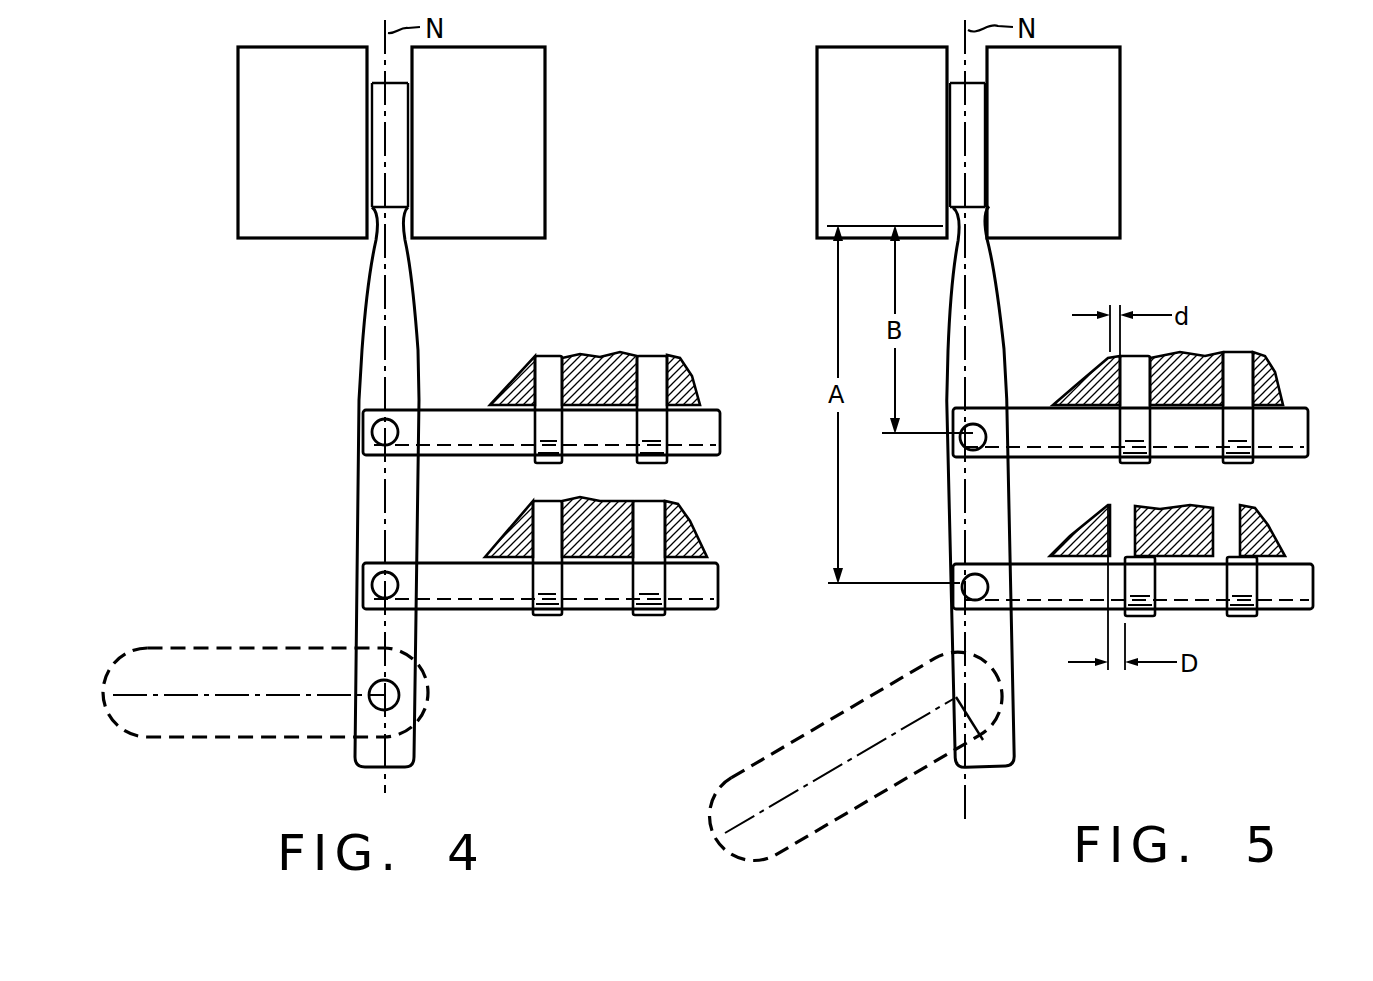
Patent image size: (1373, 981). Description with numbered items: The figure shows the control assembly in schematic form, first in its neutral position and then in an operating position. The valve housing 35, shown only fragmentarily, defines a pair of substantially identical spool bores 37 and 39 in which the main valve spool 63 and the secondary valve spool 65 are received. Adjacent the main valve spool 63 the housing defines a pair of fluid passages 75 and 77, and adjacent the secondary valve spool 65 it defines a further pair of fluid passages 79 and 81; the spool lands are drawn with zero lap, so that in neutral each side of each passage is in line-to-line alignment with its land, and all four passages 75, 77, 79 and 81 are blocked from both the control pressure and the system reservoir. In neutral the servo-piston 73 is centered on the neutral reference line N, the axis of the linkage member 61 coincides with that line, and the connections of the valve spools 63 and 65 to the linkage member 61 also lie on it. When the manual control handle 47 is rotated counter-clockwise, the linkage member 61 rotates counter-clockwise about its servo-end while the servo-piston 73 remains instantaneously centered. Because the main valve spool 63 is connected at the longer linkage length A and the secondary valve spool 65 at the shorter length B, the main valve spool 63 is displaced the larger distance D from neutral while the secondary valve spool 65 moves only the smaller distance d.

In FIG. 4, the valve housing 35 is at (622, 356).
In FIG. 4, the spool bore 37 is at (692, 565).
In FIG. 4, the spool bore 39 is at (692, 412).
In FIG. 4, the manual control handle 47 is at (248, 668).
In FIG. 5, the manual control handle 47 is at (843, 738).
In FIG. 4, the linkage member 61 is at (362, 312).
In FIG. 4, the main valve spool 63 is at (458, 582).
In FIG. 5, the main valve spool 63 is at (1300, 580).
In FIG. 4, the secondary valve spool 65 is at (465, 425).
In FIG. 5, the secondary valve spool 65 is at (1295, 425).
In FIG. 4, the servo-piston 73 is at (525, 117).
In FIG. 5, the servo-piston 73 is at (1097, 117).
In FIG. 4, the fluid passage 75 is at (545, 520).
In FIG. 4, the fluid passage 77 is at (652, 525).
In FIG. 4, the fluid passage 79 is at (548, 372).
In FIG. 4, the fluid passage 81 is at (652, 376).